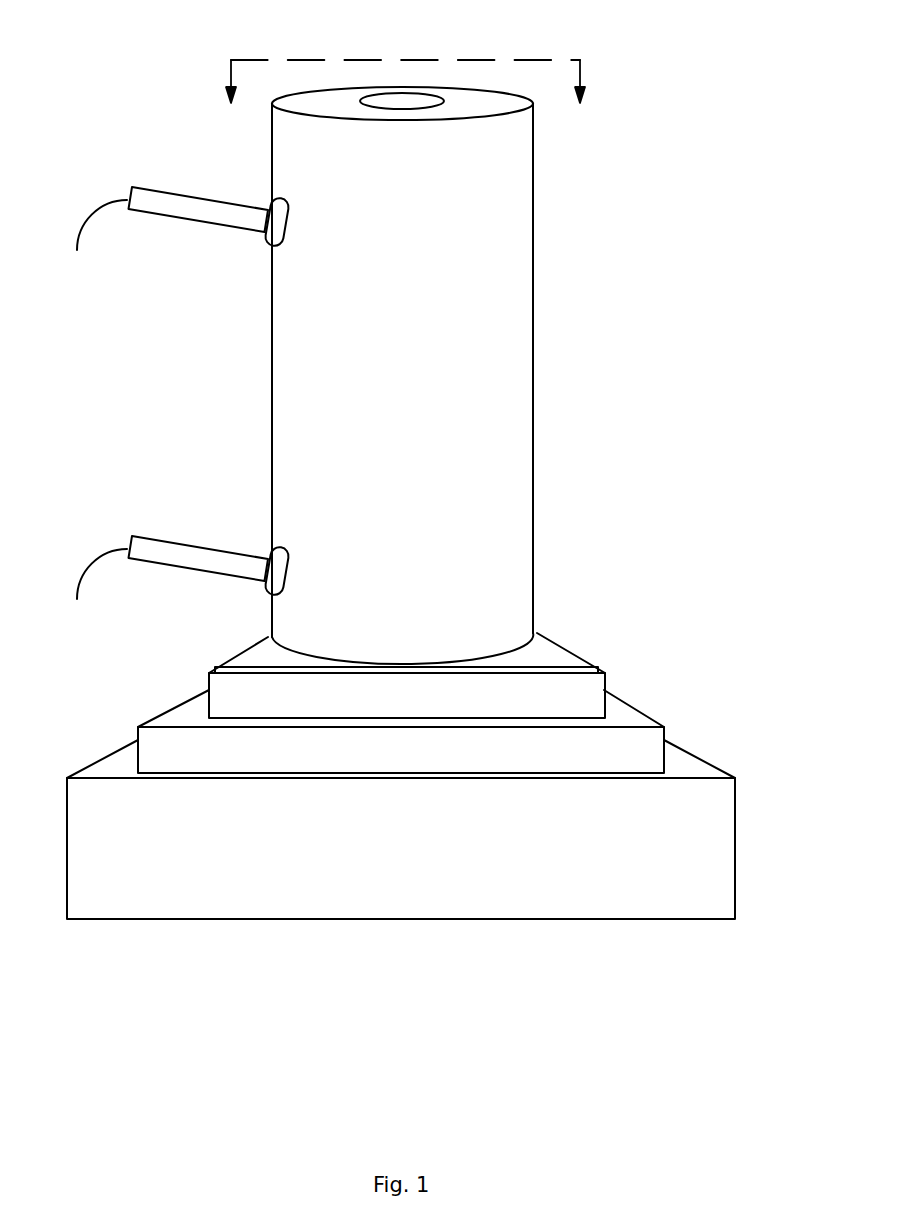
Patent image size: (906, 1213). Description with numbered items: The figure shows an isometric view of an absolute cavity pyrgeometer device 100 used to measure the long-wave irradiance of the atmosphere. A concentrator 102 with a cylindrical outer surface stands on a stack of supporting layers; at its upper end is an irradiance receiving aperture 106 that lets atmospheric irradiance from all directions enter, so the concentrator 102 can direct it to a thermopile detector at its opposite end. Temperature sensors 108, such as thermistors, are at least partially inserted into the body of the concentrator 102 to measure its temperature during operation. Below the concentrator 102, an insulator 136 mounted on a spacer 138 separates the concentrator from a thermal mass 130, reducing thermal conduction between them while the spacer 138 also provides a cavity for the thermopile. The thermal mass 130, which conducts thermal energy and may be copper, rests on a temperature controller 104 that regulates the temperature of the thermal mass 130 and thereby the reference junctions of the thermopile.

The pyrgeometer device 100 is at (181, 57).
The concentrator 102 is at (533, 279).
The temperature controller 104 is at (717, 843).
The irradiance receiving aperture 106 is at (402, 100).
The temperature sensors 108 is at (203, 198).
The thermal mass 130 is at (657, 757).
The insulator 136 is at (557, 665).
The spacer 138 is at (593, 702).